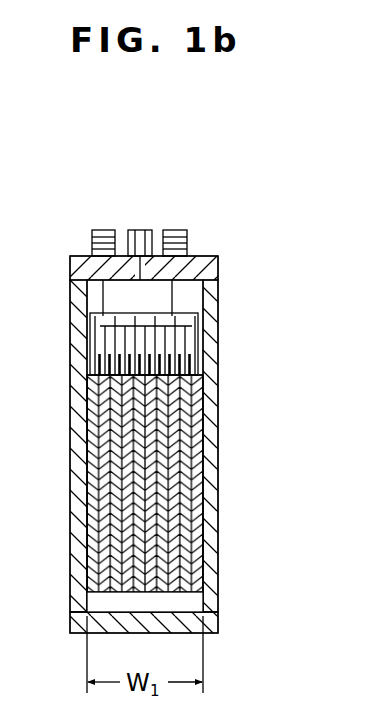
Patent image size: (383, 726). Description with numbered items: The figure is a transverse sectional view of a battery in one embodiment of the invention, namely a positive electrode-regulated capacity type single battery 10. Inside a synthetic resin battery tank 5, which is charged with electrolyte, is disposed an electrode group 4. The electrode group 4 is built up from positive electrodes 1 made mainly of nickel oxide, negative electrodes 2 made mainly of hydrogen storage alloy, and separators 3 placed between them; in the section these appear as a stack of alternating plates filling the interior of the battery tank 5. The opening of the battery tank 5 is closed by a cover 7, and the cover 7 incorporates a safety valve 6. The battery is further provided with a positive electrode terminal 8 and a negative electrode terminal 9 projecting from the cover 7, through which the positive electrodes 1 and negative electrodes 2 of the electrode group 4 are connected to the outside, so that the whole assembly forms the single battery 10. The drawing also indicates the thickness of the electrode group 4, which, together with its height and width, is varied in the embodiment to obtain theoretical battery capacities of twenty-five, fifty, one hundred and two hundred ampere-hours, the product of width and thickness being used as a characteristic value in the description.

The positive electrodes 1 is at (262, 482).
The negative electrodes 2 is at (194, 490).
The separators 3 is at (199, 531).
The electrode group 4 is at (193, 495).
The battery tank 5 is at (212, 628).
The safety valve 6 is at (140, 230).
The cover 7 is at (72, 261).
The positive electrode terminal 8 is at (101, 230).
The negative electrode terminal 9 is at (173, 230).
The single battery 10 is at (206, 257).